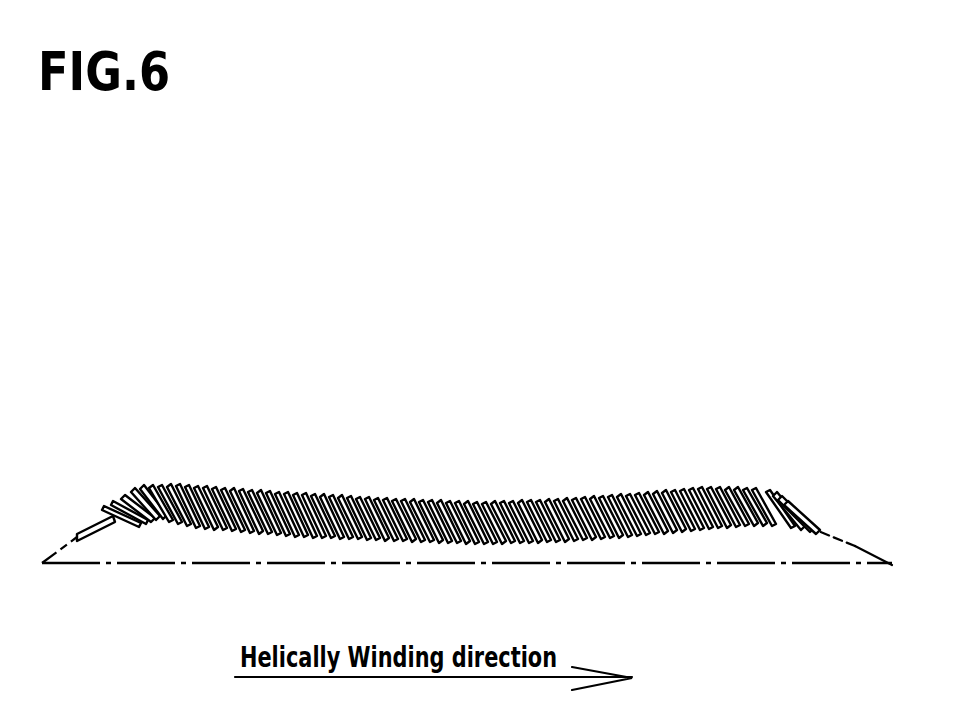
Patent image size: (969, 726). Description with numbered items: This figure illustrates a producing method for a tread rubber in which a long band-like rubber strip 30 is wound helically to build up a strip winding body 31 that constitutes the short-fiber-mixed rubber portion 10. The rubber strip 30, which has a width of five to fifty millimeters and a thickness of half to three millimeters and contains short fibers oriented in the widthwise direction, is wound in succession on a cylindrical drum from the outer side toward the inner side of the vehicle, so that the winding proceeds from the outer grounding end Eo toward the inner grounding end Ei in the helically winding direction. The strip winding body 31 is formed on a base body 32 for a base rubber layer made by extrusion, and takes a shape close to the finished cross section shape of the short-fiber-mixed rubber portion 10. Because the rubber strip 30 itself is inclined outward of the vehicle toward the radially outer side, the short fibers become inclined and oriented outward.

The rubber strip 30 is at (165, 487).
The strip winding body 31 is at (448, 440).
The short-fiber-mixed rubber portion 10 is at (448, 440).
The base body 32 is at (838, 537).
The outer grounding end Eo is at (150, 472).
The inner grounding end Ei is at (722, 486).